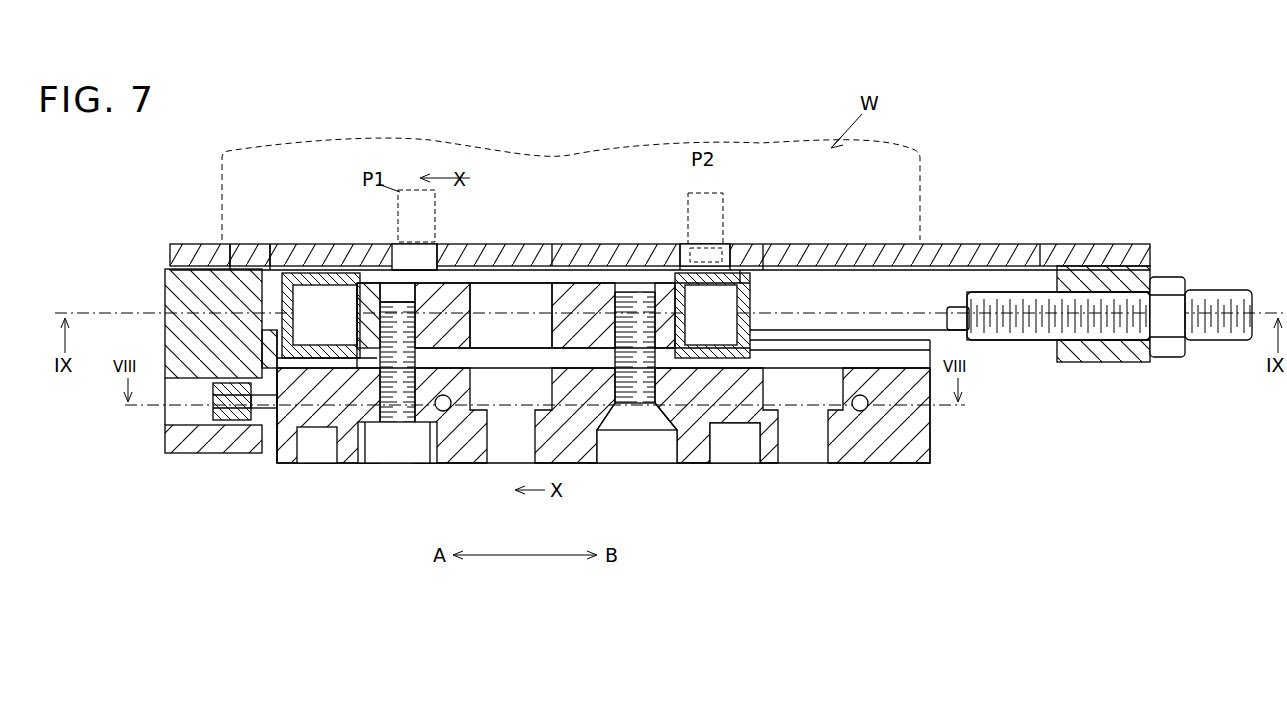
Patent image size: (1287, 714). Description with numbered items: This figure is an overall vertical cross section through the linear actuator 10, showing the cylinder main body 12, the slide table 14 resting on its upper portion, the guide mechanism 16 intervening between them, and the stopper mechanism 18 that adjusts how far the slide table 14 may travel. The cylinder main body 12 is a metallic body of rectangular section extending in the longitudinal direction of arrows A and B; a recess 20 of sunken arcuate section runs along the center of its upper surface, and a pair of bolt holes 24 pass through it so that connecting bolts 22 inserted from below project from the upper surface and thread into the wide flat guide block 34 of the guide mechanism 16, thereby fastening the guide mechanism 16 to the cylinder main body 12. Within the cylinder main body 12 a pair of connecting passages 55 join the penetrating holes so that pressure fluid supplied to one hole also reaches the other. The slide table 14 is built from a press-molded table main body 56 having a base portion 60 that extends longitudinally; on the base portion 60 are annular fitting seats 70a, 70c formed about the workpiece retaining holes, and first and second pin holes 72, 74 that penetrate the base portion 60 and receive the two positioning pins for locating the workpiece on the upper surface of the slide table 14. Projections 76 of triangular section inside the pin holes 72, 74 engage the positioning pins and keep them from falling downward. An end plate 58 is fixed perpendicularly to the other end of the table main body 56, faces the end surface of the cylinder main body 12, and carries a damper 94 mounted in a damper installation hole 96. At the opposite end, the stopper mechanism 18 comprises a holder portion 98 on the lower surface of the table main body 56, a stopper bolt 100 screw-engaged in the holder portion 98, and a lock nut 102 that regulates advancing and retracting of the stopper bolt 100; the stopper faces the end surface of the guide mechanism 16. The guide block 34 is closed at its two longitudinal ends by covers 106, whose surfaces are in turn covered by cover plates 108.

The linear actuator 10 is at (1028, 201).
The cylinder main body 12 is at (907, 478).
The slide table 14 is at (848, 258).
The guide mechanism 16 is at (765, 306).
The stopper mechanism 18 is at (1233, 277).
The recess 20 is at (887, 350).
The connecting bolts 22 is at (415, 440).
The bolt holes 24 is at (372, 466).
The guide block 34 is at (583, 283).
The connecting passages 55 is at (447, 414).
The table main body 56 is at (622, 292).
The end plate 58 is at (172, 455).
The base portion 60 is at (485, 292).
The fitting seat 70a is at (680, 262).
The fitting seat 70c is at (433, 247).
The first pin hole 72 is at (410, 256).
The second pin hole 74 is at (712, 240).
The projections 76 is at (357, 304).
The damper 94 is at (250, 423).
The damper installation hole 96 is at (163, 417).
The holder portion 98 is at (1080, 266).
The stopper bolt 100 is at (1222, 343).
The lock nut 102 is at (1160, 352).
The covers 106 is at (331, 272).
The cover plates 108 is at (290, 244).